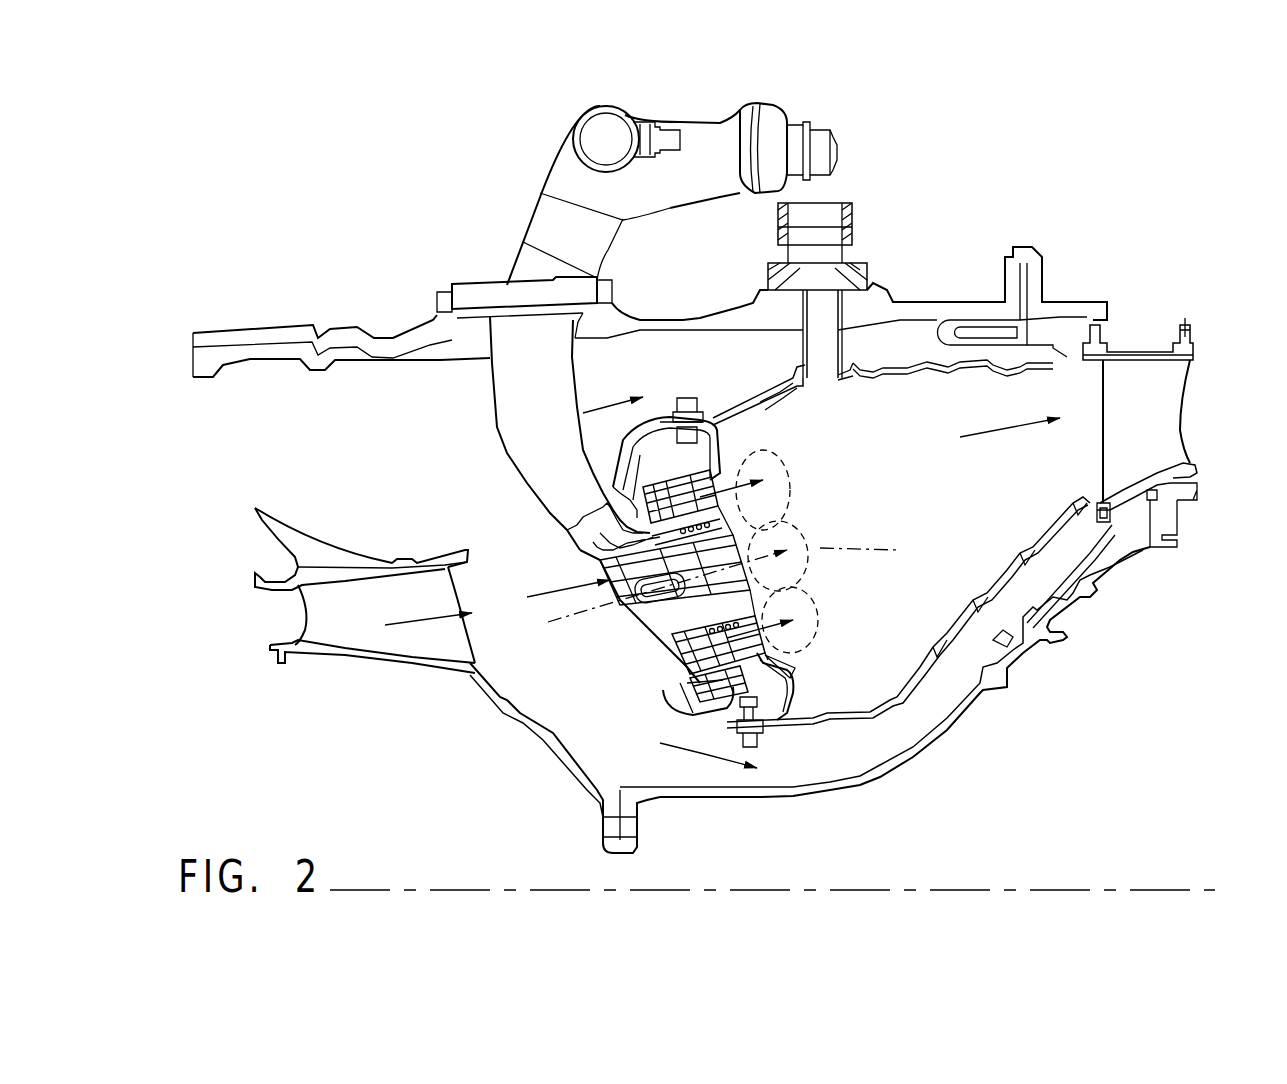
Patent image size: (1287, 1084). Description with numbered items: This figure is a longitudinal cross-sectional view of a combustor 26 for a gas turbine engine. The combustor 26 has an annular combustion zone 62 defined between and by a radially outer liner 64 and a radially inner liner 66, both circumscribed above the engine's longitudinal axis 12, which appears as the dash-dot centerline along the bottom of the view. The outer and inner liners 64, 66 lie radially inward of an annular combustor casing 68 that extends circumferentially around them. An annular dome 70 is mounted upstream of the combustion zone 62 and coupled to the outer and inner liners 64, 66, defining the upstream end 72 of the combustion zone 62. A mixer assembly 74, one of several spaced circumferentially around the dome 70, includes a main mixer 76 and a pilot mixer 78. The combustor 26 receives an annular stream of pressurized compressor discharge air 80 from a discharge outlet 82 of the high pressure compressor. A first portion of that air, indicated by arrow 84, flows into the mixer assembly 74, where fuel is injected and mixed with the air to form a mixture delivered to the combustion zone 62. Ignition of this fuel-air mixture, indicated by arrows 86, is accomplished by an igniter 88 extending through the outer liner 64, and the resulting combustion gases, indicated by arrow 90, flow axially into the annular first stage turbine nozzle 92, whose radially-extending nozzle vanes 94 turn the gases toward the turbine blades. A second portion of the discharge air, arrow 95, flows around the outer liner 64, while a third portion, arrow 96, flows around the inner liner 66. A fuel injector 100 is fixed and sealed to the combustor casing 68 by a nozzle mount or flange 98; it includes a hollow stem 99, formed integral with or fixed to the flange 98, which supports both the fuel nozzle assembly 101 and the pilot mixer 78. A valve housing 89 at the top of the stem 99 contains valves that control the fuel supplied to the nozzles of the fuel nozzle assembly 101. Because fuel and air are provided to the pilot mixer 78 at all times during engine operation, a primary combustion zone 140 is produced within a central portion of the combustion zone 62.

The longitudinal axis 12 is at (1012, 890).
The combustor 26 is at (1052, 153).
The combustion zone 62 is at (870, 488).
The outer liner 64 is at (893, 362).
The inner liner 66 is at (853, 723).
The combustor casing 68 is at (912, 300).
The dome 70 is at (713, 416).
The upstream end 72 is at (808, 422).
The mixer assembly 74 is at (657, 462).
The main mixer 76 is at (713, 723).
The pilot mixer 78 is at (643, 633).
The compressor discharge air 80 is at (417, 628).
The discharge outlet 82 is at (418, 609).
The first portion of compressor discharge air 84 is at (557, 592).
The ignition of the fuel-air mixture 86 is at (740, 473).
The igniter 88 is at (850, 210).
The valve housing 89 is at (720, 135).
The combustion gases 90 is at (1000, 427).
The first stage turbine nozzle 92 is at (1148, 345).
The nozzle vanes 94 is at (1162, 426).
The second portion of compressor discharge air 95 is at (603, 407).
The third portion of compressor discharge air 96 is at (690, 753).
The flange 98 is at (468, 298).
The hollow stem 99 is at (503, 457).
The fuel injector 100 is at (528, 213).
The fuel nozzle assembly 101 is at (612, 621).
The primary combustion zone 140 is at (882, 547).